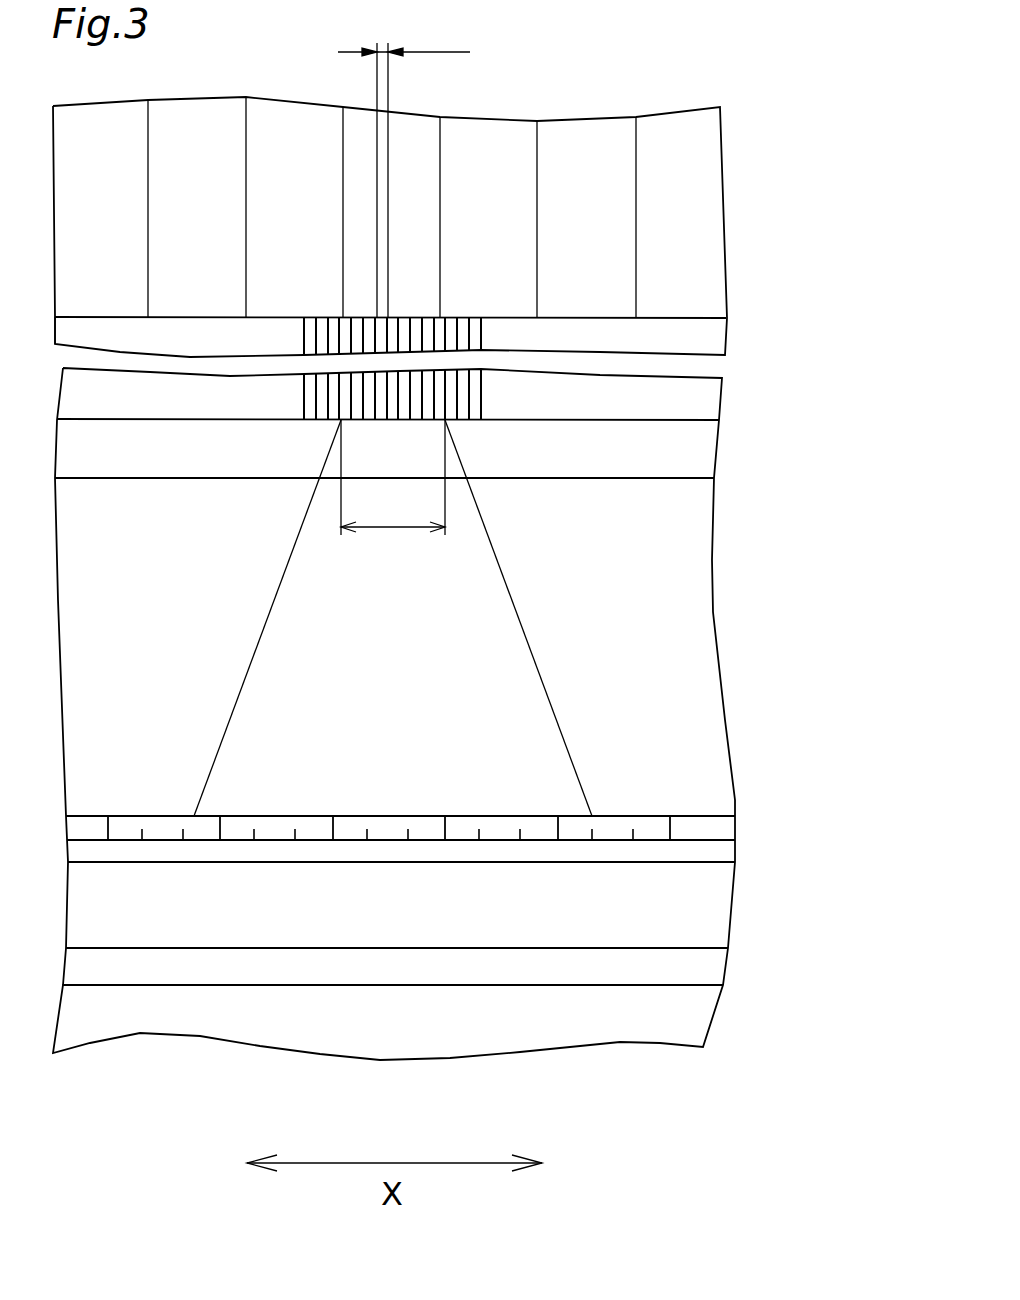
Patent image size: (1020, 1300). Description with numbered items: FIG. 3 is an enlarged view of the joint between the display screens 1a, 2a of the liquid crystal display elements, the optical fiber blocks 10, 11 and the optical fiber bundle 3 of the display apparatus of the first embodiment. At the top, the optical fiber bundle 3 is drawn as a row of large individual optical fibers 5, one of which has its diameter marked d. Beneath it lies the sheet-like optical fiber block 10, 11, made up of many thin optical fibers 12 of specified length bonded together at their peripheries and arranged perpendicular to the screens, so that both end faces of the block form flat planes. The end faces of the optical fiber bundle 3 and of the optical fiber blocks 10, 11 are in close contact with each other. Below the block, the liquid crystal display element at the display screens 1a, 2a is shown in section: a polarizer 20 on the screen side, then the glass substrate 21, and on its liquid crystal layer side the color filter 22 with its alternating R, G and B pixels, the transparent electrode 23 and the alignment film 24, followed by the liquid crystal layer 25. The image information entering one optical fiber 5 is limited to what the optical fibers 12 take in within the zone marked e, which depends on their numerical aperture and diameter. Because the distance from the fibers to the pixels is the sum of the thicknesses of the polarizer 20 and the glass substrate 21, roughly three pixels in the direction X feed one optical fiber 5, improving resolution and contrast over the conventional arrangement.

The optical fiber bundle 3 is at (429, 178).
The optical fiber 5 is at (623, 128).
The optical fiber block 10 is at (460, 330).
The optical fiber block 11 is at (713, 335).
The optical fiber 12 is at (482, 398).
The display screen 1a is at (480, 753).
The display screen 2a is at (744, 417).
The polarizer 20 is at (707, 448).
The glass substrate 21 is at (703, 612).
The color filter 22 is at (727, 832).
The transparent electrode 23 is at (722, 900).
The alignment film 24 is at (717, 973).
The liquid crystal layer 25 is at (570, 1035).